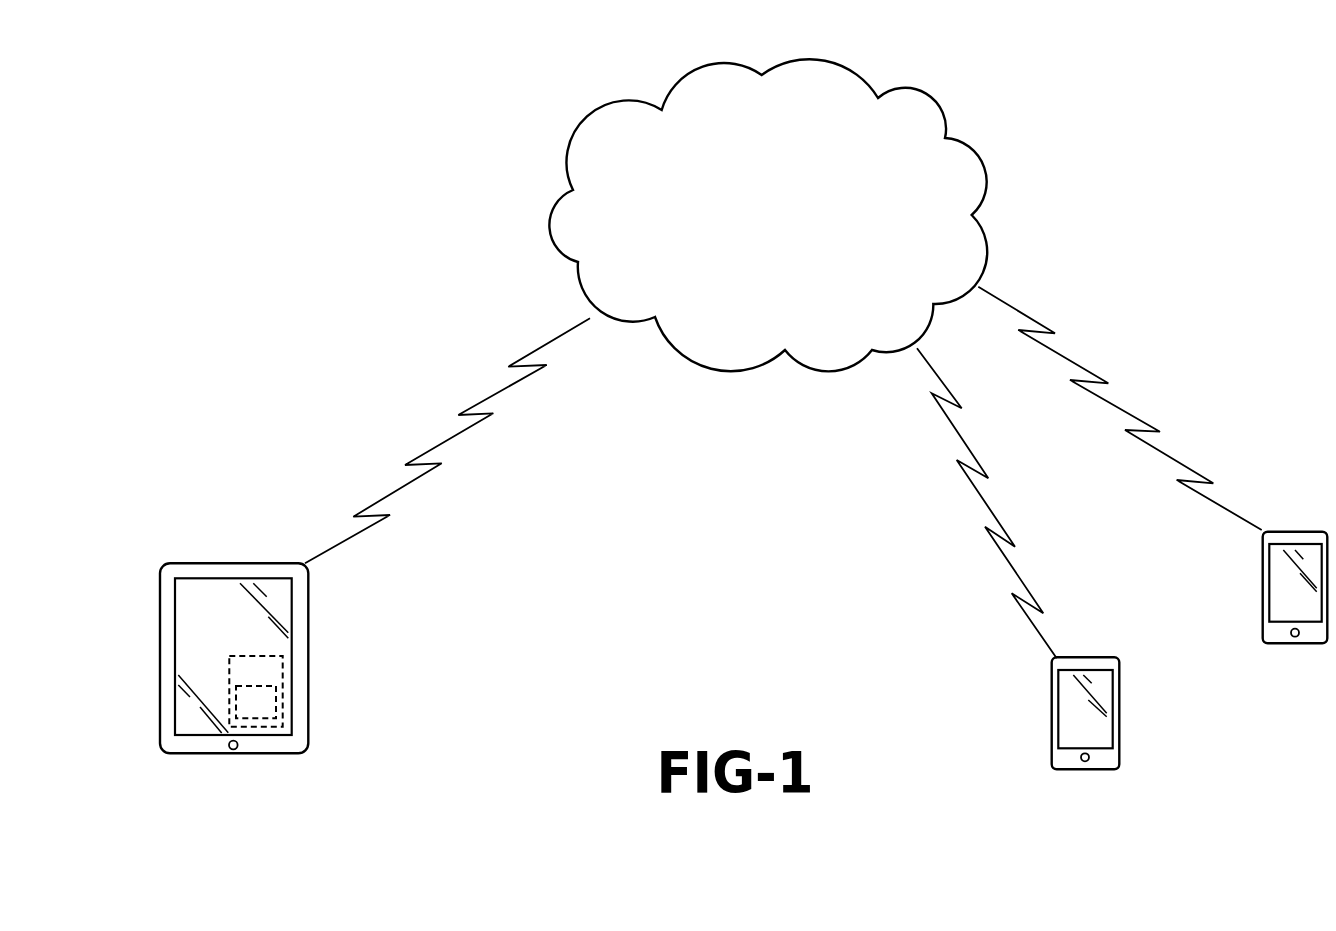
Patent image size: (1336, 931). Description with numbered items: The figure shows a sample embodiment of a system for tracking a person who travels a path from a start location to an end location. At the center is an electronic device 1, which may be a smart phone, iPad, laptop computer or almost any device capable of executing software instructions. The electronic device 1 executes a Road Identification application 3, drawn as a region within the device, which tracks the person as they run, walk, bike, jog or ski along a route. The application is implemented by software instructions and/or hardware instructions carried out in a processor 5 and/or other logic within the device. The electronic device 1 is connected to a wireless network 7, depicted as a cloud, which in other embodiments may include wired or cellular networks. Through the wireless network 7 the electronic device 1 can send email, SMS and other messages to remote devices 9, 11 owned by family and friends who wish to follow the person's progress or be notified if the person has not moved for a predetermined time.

The electronic device 1 is at (324, 596).
The Road Identification (ID) application 3 is at (263, 705).
The processor 5 is at (283, 672).
The wireless network 7 is at (936, 85).
The remote device 9 is at (1263, 576).
The remote device 11 is at (1052, 700).